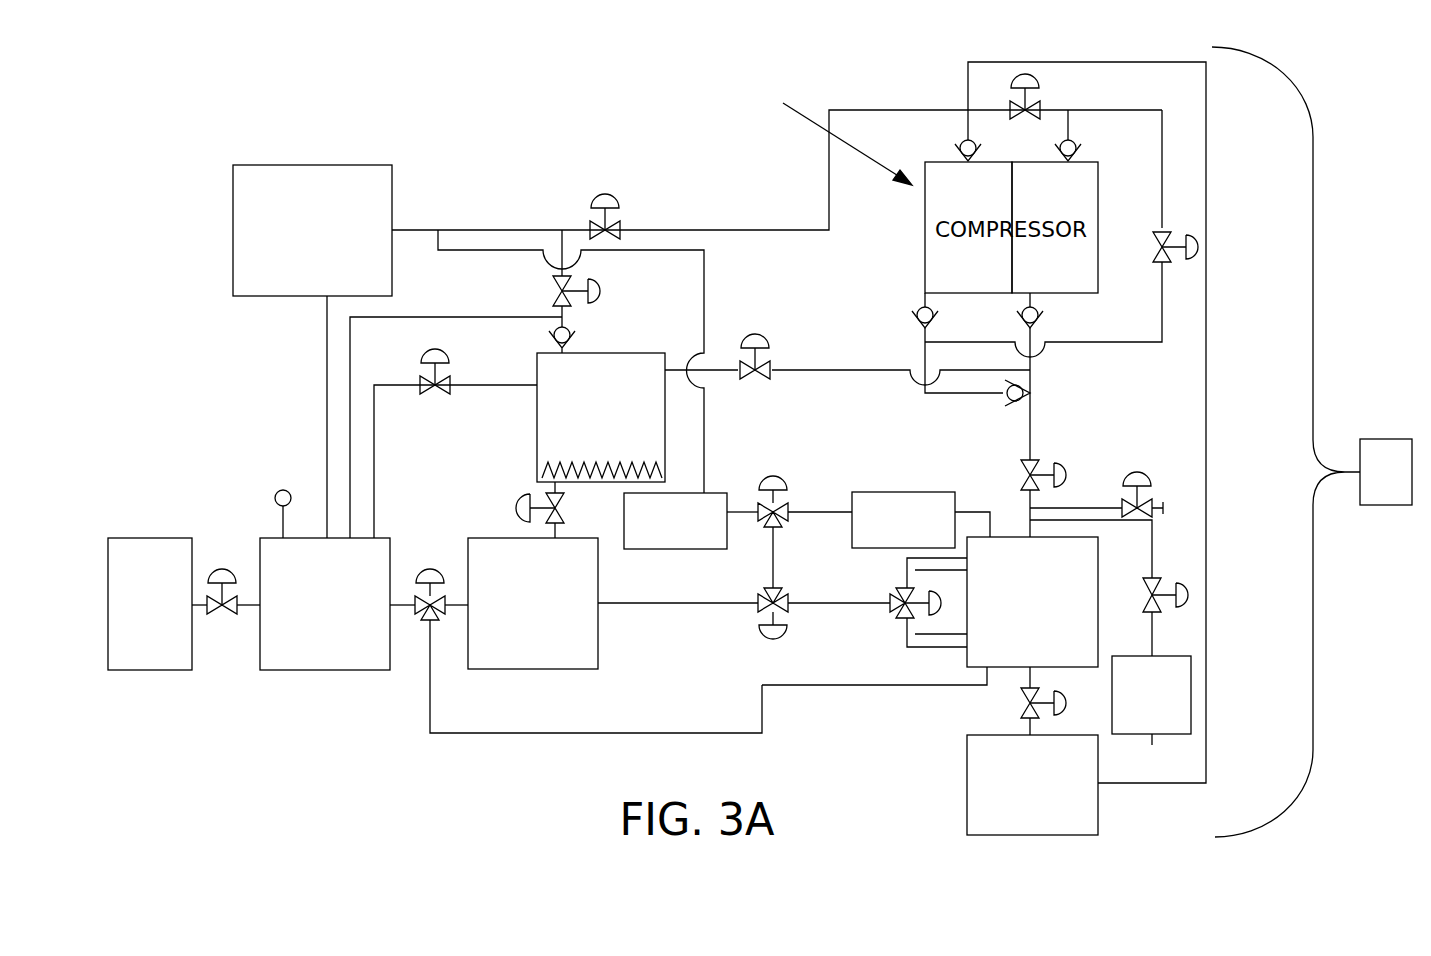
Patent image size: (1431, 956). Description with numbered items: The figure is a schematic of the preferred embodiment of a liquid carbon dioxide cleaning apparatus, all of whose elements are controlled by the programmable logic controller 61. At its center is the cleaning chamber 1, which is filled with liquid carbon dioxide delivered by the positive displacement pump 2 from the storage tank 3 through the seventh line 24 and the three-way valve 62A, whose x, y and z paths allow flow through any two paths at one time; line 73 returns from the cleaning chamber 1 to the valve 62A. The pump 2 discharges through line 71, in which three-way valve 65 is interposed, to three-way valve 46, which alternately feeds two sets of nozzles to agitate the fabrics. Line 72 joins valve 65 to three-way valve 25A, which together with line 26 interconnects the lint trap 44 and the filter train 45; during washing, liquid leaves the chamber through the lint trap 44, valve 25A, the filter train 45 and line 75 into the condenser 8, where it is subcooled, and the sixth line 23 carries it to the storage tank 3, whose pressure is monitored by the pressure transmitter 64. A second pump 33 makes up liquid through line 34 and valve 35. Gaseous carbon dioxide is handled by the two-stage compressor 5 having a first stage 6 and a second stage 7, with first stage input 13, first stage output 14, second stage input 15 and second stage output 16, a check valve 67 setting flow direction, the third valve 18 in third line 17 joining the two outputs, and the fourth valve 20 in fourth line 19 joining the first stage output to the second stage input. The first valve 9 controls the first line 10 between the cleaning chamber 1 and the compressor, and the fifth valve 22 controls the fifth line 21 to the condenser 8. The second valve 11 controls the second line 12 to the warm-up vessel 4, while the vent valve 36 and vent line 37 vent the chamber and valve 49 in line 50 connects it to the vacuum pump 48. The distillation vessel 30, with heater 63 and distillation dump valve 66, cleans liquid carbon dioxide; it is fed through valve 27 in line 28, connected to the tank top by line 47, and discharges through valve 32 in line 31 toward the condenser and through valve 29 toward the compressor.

The cleaning chamber 1 is at (1080, 668).
The pump 2 is at (533, 669).
The storage tank 3 is at (348, 670).
The warm-up vessel 4 is at (967, 810).
The compressor 5 is at (833, 125).
The first stage 6 is at (1073, 198).
The second stage 7 is at (950, 258).
The condenser 8 is at (233, 220).
The first valve 9 is at (1030, 460).
The first line 10 is at (1030, 420).
The second valve 11 is at (977, 685).
The second line 12 is at (1027, 725).
The first stage input 13 is at (1035, 305).
The first stage output 14 is at (1072, 120).
The second stage input 15 is at (913, 305).
The second stage output 16 is at (968, 122).
The third line 17 is at (990, 100).
The third valve 18 is at (1040, 105).
The fourth line 19 is at (1162, 187).
The fourth valve 20 is at (1168, 232).
The fifth line 21 is at (502, 228).
The fifth valve 22 is at (612, 220).
The sixth line 23 is at (325, 417).
The seventh line 24 is at (402, 610).
The three-way valve 25A is at (757, 485).
The line 26 is at (810, 505).
The valve 27 is at (412, 390).
The line 28 is at (375, 465).
The valve 29 is at (767, 360).
The distillation vessel 30 is at (537, 393).
The line 31 is at (577, 320).
The valve 32 is at (553, 307).
The second pump 33 is at (165, 538).
The line 34 is at (250, 613).
The valve 35 is at (210, 620).
The vent valve 36 is at (1152, 503).
The vent line 37 is at (1090, 496).
The lint trap 44 is at (937, 490).
The filter train 45 is at (673, 549).
The three-way valve 46 is at (893, 607).
The line 47 is at (350, 383).
The vacuum pump 48 is at (1191, 695).
The valve 49 is at (1157, 608).
The line 50 is at (1109, 518).
The programmable logic controller 61 is at (1377, 439).
The three-way valve 62A is at (437, 628).
The heater 63 is at (540, 462).
The pressure transmitter 64 is at (275, 503).
The three-way valve 65 is at (757, 608).
The distillation dump valve 66 is at (518, 520).
The check valve 67 is at (913, 318).
The line 71 is at (633, 603).
The line 72 is at (773, 558).
The line 73 is at (792, 687).
The line 75 is at (704, 298).